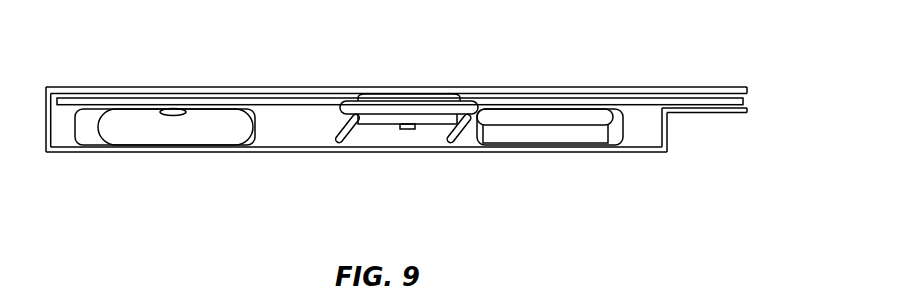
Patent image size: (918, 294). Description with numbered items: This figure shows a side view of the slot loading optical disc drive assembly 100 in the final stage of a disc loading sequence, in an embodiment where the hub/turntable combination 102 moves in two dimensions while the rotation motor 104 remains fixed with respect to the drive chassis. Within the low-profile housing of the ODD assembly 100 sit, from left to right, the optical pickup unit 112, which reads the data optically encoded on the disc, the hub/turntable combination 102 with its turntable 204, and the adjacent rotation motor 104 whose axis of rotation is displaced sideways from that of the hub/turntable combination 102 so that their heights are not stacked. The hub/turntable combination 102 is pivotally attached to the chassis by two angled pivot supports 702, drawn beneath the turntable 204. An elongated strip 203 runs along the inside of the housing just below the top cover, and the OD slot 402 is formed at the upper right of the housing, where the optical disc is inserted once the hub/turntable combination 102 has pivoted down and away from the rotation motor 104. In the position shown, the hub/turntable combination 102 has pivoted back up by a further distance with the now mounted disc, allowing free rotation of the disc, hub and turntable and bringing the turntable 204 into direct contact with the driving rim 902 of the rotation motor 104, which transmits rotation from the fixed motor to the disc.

The optical disc drive assembly 100 is at (672, 130).
The hub/turntable combination 102 is at (360, 70).
The rotation motor 104 is at (557, 132).
The optical pickup unit 112 is at (175, 127).
The inner bar 203 is at (522, 98).
The turntable 204 is at (456, 108).
The OD slot 402 is at (755, 92).
The pivot supports 702 is at (445, 143).
The driving rim 902 is at (490, 120).